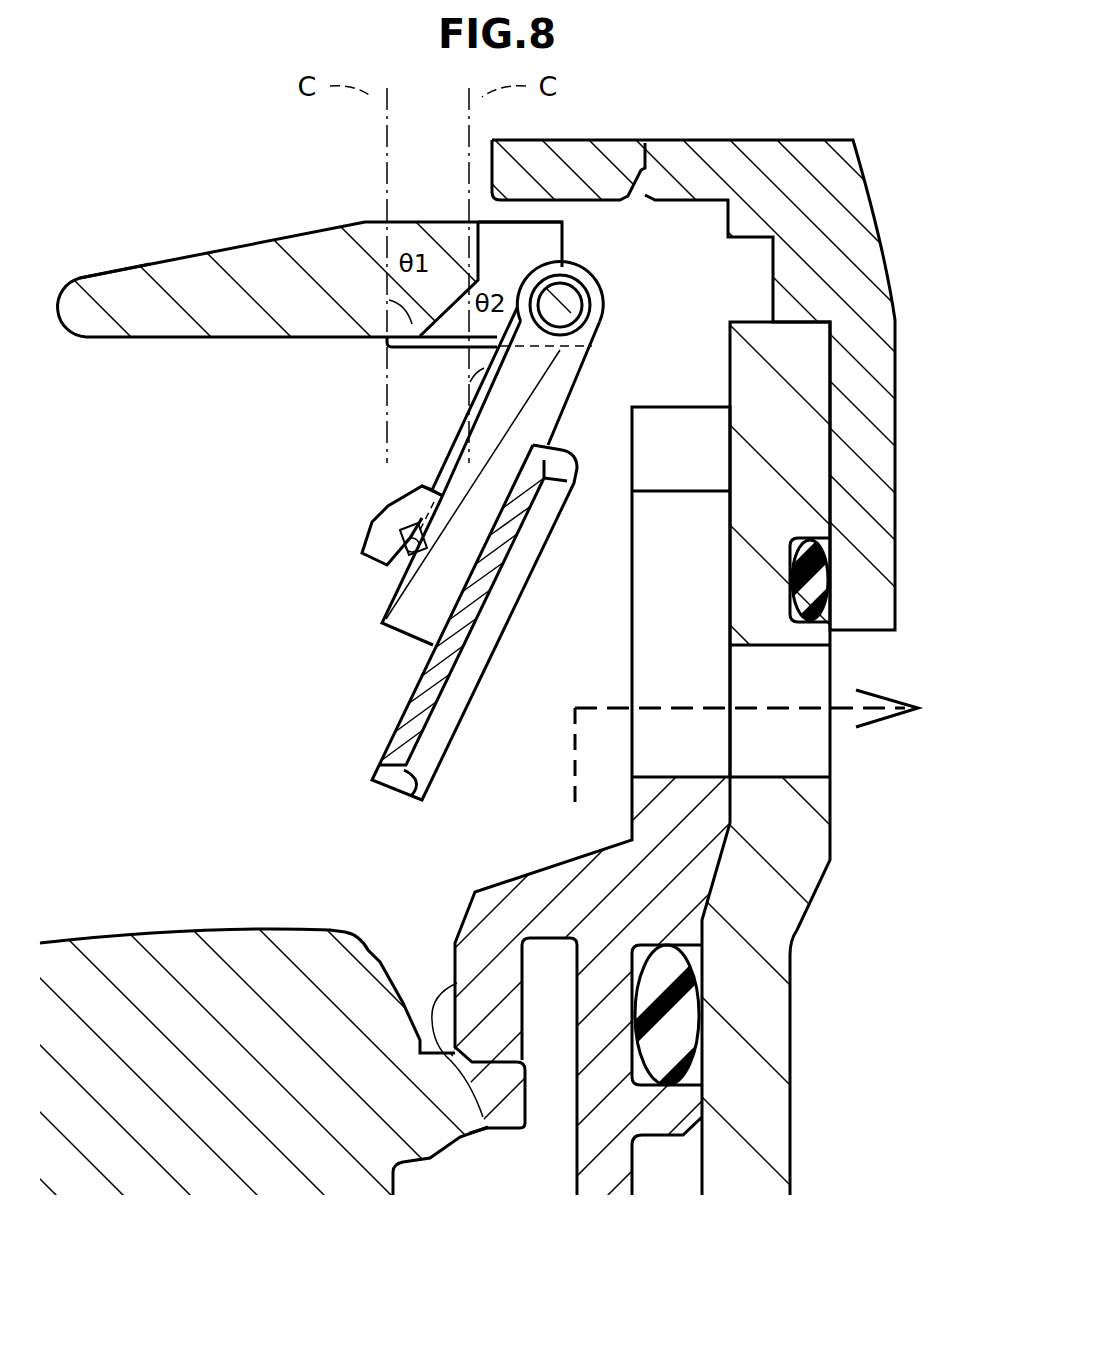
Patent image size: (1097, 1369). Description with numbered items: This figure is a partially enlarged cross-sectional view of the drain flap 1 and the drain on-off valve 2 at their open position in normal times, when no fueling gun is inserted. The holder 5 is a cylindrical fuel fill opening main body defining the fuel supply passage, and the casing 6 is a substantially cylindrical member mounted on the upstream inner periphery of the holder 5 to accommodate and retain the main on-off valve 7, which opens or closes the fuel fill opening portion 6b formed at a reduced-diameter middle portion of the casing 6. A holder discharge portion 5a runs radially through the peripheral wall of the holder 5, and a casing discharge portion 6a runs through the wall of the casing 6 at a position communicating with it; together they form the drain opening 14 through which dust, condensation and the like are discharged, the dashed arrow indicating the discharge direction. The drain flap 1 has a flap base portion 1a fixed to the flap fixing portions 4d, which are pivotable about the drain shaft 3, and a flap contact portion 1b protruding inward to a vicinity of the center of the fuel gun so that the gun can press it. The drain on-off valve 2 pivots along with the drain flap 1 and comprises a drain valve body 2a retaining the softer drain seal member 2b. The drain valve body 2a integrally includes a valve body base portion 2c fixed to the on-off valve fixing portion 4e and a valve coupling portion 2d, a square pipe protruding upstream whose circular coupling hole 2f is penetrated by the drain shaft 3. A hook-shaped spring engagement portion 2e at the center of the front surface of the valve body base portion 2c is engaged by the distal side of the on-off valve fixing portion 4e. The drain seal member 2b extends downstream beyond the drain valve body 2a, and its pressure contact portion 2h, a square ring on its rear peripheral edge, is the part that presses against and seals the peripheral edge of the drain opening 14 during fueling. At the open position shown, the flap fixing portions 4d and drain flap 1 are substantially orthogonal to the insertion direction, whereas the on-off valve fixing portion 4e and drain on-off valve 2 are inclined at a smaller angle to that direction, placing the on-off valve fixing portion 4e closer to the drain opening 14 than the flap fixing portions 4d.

The drain flap 1 is at (248, 230).
The flap base portion 1a is at (440, 222).
The flap contact portion 1b is at (178, 252).
The drain on-off valve 2 is at (280, 638).
The drain valve body 2a is at (396, 633).
The drain seal member 2b is at (400, 709).
The valve body base portion 2c is at (396, 597).
The valve coupling portion 2d is at (590, 338).
The spring engagement portion 2e is at (385, 521).
The coupling hole 2f is at (576, 309).
The pressure contact portion 2h is at (421, 790).
The drain shaft 3 is at (568, 300).
The flap fixing portions 4d is at (432, 349).
The on-off valve fixing portion 4e is at (447, 457).
The holder 5 is at (798, 1000).
The holder discharge portion 5a is at (810, 777).
The casing 6 is at (720, 882).
The casing discharge portion 6a is at (700, 777).
The fuel fill opening portion 6b is at (483, 1117).
The main on-off valve 7 is at (250, 950).
The drain opening 14 is at (905, 738).